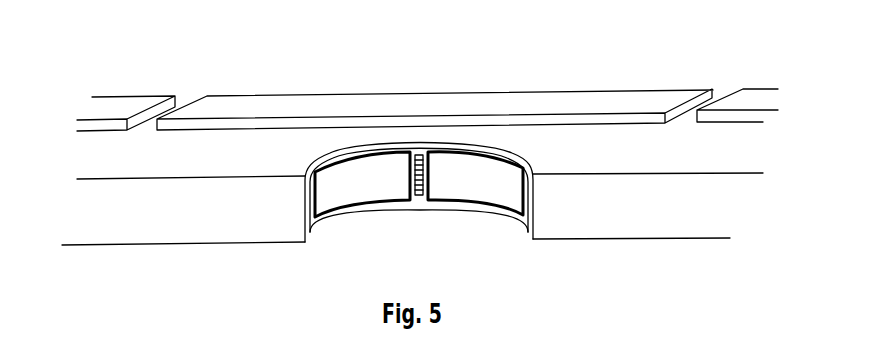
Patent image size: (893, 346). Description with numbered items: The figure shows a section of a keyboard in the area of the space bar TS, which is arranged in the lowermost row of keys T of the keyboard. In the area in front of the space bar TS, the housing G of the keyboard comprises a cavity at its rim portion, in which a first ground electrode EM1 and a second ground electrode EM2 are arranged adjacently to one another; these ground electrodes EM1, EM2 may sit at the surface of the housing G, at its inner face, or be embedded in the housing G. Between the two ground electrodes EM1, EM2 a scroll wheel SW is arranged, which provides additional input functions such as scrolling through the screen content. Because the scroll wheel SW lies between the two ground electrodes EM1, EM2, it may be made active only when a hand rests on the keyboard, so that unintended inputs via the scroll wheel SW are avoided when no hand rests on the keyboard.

The row of keys T is at (427, 81).
The space bar TS is at (435, 80).
The scroll wheel SW is at (445, 123).
The first ground electrode EM1 is at (362, 208).
The second ground electrode EM2 is at (475, 207).
The housing G is at (412, 213).